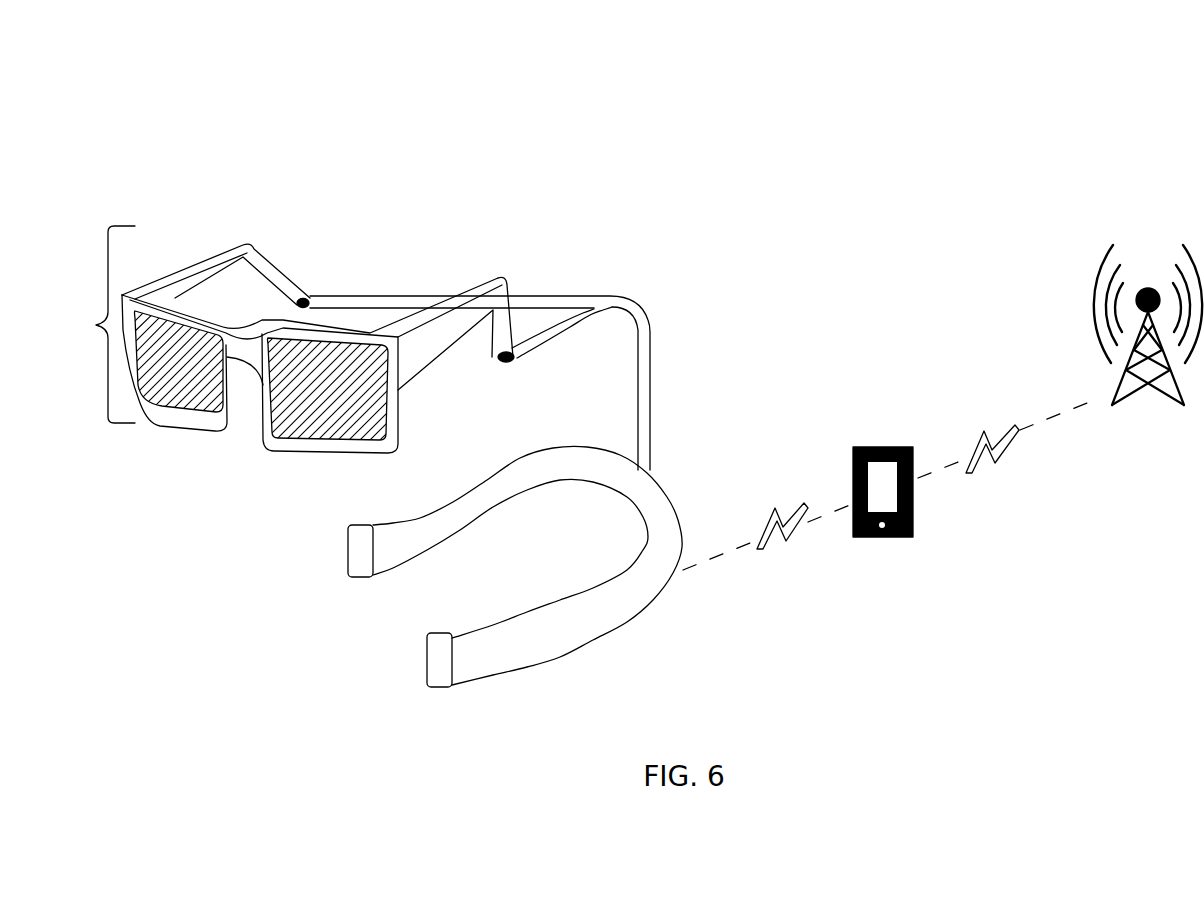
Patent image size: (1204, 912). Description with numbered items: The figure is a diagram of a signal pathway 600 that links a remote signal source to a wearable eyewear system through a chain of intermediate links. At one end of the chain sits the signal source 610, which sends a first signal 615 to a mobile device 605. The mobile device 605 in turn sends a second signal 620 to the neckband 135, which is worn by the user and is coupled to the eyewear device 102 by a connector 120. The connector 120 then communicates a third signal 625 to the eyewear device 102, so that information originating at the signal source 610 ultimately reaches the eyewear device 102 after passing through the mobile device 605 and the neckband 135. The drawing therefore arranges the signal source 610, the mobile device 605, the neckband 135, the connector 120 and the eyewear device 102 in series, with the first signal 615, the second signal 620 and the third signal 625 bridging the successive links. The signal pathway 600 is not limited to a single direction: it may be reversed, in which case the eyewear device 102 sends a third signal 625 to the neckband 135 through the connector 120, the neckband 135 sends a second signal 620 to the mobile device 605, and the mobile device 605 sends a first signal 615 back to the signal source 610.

The signal pathway 600 is at (151, 48).
The eyewear device 102 is at (95, 325).
The connector 120 is at (650, 320).
The neckband 135 is at (420, 688).
The third signal 625 is at (652, 435).
The second signal 620 is at (767, 549).
The mobile device 605 is at (878, 545).
The first signal 615 is at (984, 423).
The signal source 610 is at (1148, 387).